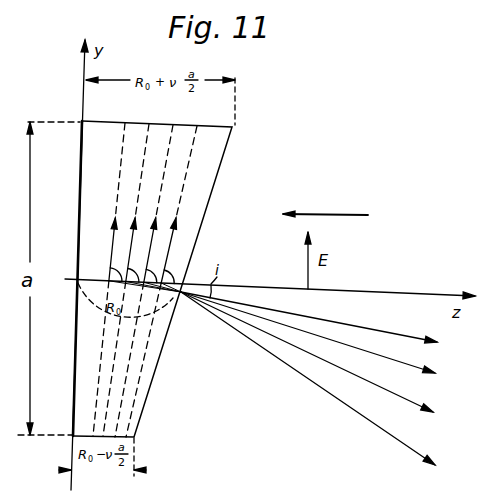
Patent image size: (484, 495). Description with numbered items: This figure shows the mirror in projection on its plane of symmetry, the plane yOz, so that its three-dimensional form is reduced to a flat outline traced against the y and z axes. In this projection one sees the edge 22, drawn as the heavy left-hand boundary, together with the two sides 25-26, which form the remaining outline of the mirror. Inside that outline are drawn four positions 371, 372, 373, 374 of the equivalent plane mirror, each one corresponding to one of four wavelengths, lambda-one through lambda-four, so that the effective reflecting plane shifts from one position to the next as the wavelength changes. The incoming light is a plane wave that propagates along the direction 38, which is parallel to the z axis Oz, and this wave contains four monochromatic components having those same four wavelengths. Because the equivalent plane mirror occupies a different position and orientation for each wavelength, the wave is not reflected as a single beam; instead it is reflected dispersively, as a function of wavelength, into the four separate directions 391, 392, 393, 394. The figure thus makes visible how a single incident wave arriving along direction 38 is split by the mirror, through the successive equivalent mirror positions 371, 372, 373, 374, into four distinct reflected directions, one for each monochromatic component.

The edge 22 is at (80, 172).
The sides 25-26 is at (216, 186).
The position of the equivalent plane mirror 371 is at (201, 130).
The position of the equivalent plane mirror 372 is at (174, 130).
The position of the equivalent plane mirror 373 is at (157, 130).
The position of the equivalent plane mirror 374 is at (127, 131).
The direction of propagation 38 is at (312, 214).
The reflection direction 391 is at (377, 424).
The reflection direction 392 is at (377, 387).
The reflection direction 393 is at (377, 356).
The reflection direction 394 is at (380, 331).